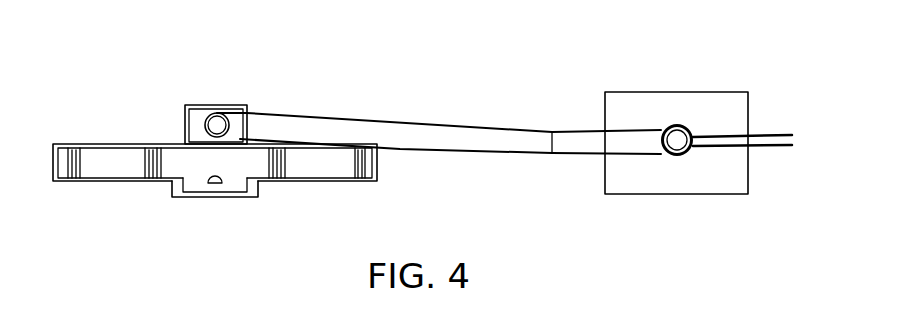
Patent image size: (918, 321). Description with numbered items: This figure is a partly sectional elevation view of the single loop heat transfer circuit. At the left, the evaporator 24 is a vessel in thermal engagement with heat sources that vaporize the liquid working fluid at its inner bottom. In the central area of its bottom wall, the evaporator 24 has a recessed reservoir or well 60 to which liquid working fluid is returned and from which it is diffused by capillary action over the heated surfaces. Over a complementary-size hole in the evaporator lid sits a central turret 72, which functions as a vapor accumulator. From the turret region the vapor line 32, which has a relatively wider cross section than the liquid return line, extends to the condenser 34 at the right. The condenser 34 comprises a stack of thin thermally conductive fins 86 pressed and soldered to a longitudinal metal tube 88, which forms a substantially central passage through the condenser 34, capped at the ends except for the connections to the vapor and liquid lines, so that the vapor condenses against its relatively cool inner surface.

The evaporator 24 is at (62, 180).
The vapor line 32 is at (470, 140).
The condenser 34 is at (662, 98).
The well 60 is at (200, 200).
The central turret 72 is at (190, 122).
The fins 86 is at (730, 185).
The longitudinal tube 88 is at (678, 145).